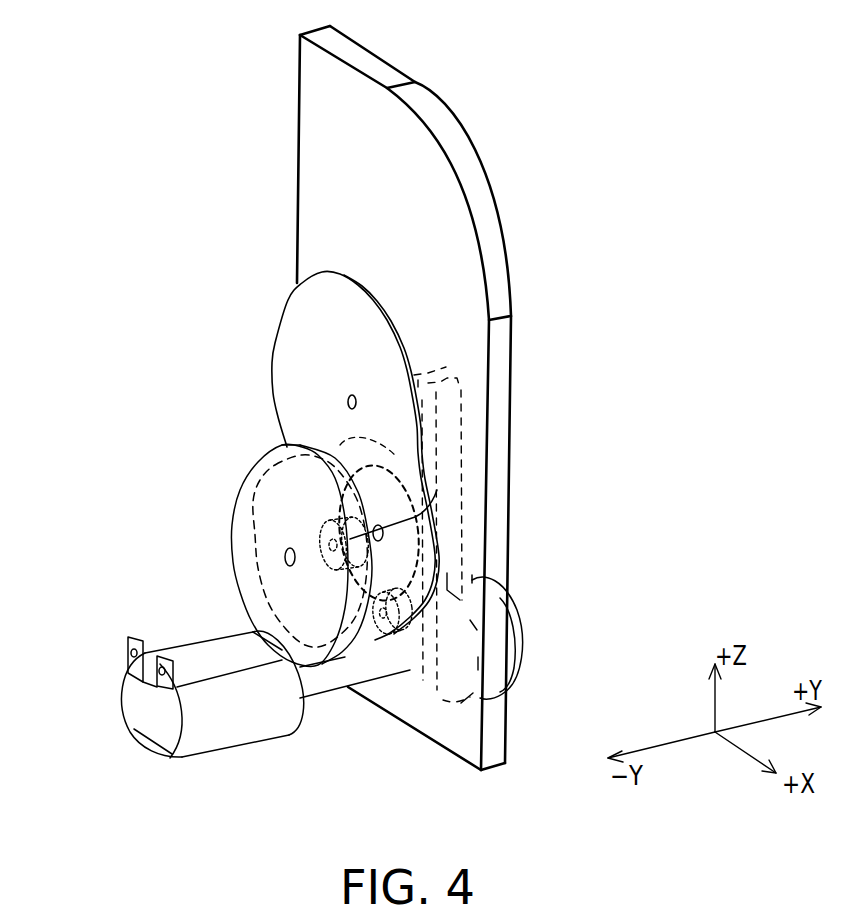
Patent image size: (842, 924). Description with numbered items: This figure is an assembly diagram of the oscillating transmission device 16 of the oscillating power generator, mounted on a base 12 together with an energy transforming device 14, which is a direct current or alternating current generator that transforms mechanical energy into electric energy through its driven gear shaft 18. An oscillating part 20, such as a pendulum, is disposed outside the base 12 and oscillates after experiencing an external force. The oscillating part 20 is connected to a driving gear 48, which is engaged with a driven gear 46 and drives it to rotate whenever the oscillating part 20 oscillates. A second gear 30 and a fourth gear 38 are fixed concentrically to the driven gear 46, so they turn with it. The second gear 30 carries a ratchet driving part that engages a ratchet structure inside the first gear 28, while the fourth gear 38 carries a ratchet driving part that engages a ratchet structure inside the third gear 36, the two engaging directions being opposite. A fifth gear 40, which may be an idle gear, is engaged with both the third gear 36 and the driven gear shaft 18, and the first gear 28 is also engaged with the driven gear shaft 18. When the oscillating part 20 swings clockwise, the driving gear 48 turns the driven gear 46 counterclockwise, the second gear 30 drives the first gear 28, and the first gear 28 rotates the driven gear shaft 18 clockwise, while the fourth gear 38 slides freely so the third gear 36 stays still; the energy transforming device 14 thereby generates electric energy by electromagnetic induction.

The base 12 is at (472, 160).
The energy transforming device 14 is at (197, 652).
The oscillating transmission device 16 is at (174, 157).
The driven gear shaft 18 is at (314, 683).
The oscillating part 20 is at (513, 637).
The first gear 28 is at (242, 507).
The second gear 30 is at (263, 470).
The third gear 36 is at (432, 586).
The fourth gear 38 is at (334, 445).
The fifth gear 40 is at (386, 634).
The driven gear 46 is at (343, 578).
The driving gear 48 is at (297, 318).